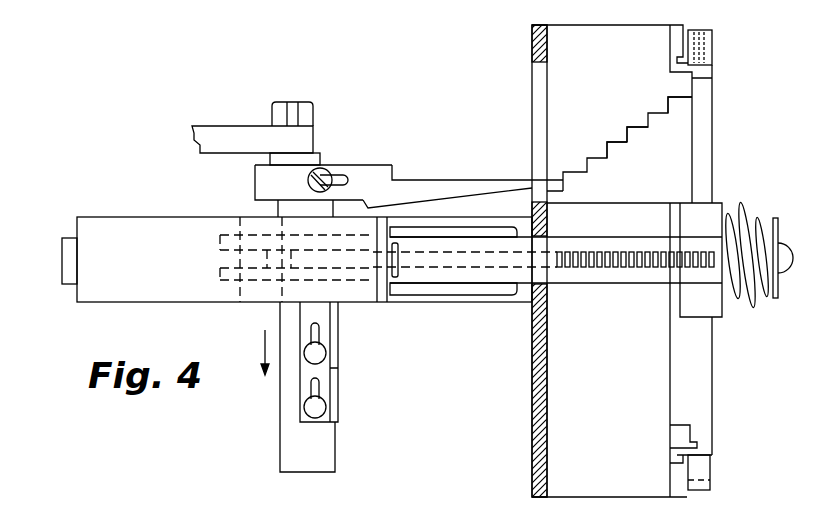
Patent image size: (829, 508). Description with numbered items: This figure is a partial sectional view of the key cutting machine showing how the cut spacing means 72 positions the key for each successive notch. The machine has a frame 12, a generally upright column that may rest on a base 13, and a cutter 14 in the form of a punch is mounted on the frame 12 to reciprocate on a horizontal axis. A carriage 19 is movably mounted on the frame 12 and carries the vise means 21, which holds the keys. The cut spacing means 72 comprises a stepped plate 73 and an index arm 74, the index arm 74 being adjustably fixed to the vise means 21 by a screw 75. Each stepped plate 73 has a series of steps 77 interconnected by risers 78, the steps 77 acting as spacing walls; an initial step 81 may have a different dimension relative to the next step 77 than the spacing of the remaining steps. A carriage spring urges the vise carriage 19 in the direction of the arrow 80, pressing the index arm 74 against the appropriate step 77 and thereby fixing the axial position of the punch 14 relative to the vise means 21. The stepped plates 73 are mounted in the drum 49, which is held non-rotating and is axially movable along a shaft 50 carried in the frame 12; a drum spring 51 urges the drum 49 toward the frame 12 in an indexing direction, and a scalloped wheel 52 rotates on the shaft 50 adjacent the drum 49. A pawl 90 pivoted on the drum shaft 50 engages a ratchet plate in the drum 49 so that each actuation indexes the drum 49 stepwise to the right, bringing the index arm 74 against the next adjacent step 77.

The frame 12 is at (132, 217).
The base 13 is at (237, 502).
The cutter 14 is at (65, 282).
The carriage 19 is at (245, 138).
The vise means 21 is at (280, 418).
The drum 49 is at (532, 365).
The shaft 50 is at (600, 228).
The drum spring 51 is at (750, 205).
The scalloped wheel 52 is at (712, 48).
The cut spacing means 72 is at (552, 162).
The stepped plate 73 is at (670, 163).
The index arm 74 is at (436, 185).
The screw 75 is at (332, 160).
The steps 77 is at (606, 145).
The risers 78 is at (640, 140).
The arrow 80 is at (265, 352).
The initial step 81 is at (680, 97).
The pawl 90 is at (515, 262).